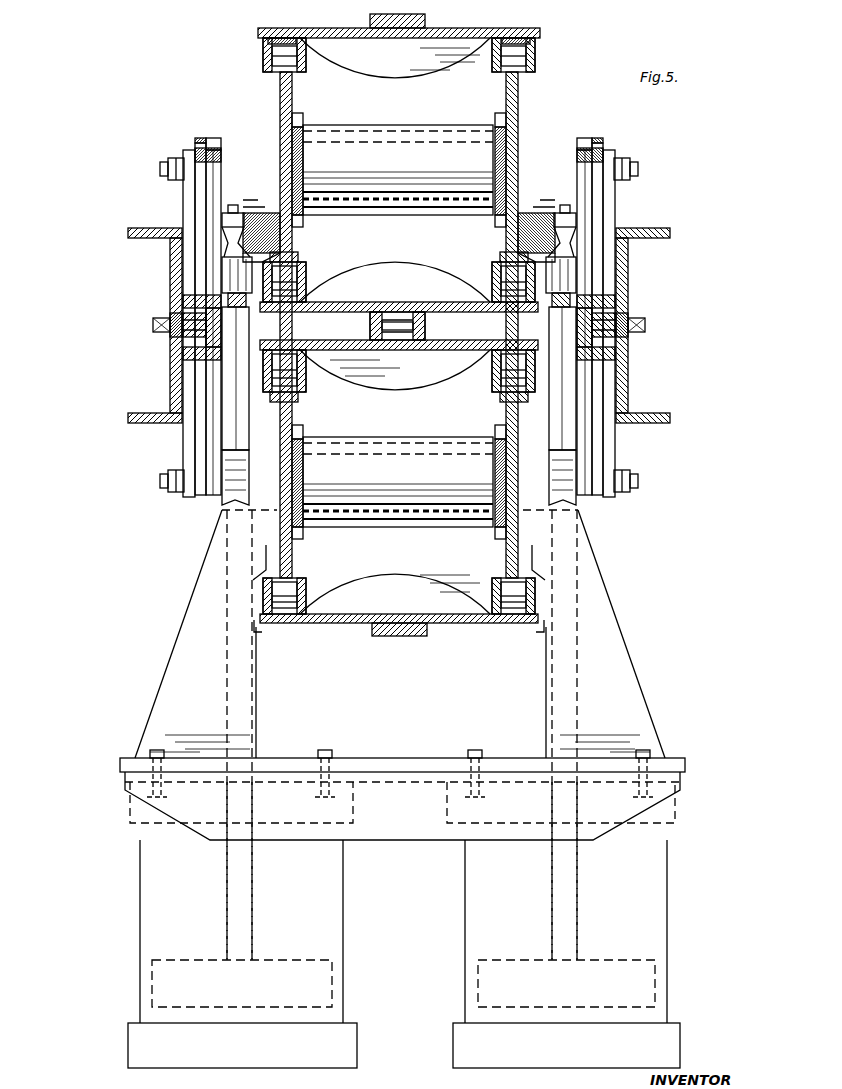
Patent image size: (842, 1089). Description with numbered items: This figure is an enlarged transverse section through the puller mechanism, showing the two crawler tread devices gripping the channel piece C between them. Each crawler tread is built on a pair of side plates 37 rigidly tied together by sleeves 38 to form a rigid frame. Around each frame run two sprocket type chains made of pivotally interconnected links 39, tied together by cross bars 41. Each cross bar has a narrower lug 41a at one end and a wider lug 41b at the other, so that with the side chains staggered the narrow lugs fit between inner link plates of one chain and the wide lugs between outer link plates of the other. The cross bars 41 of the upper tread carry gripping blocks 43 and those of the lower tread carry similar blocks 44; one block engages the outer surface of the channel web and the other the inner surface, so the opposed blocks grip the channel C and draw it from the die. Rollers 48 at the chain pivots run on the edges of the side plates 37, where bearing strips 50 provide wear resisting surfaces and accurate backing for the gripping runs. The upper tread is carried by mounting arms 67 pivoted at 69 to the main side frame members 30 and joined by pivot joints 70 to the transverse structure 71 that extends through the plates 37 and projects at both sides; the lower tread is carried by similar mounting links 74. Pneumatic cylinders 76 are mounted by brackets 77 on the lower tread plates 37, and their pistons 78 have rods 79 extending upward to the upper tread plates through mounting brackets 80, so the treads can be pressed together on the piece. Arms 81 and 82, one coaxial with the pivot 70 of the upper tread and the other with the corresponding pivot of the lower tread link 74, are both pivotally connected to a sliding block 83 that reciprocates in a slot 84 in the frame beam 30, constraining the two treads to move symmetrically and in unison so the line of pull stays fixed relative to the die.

The horizontal channel member 30 is at (128, 232).
The side plate 37 is at (280, 110).
The sleeve 38 is at (398, 125).
The link 39 is at (266, 66).
The cross bar 41 is at (446, 30).
The narrow lug 41a is at (266, 50).
The wide lug 41b is at (528, 70).
The gripping block 43 is at (372, 19).
The gripping block 44 is at (432, 332).
The roller 48 is at (273, 72).
The bearing strip 50 is at (298, 256).
The mounting arm 67 is at (184, 192).
The pivot 69 is at (170, 250).
The pivot joint 70 is at (172, 160).
The transverse structure 71 is at (590, 138).
The mounting link 74 is at (189, 447).
The cylinder 76 is at (344, 905).
The bracket 77 is at (180, 640).
The piston 78 is at (333, 976).
The piston rod 79 is at (232, 436).
The mounting bracket 80 is at (262, 205).
The arm 81 is at (210, 211).
The arm 82 is at (212, 428).
The sliding block 83 is at (190, 358).
The slot 84 is at (165, 343).
The channel piece C is at (430, 321).